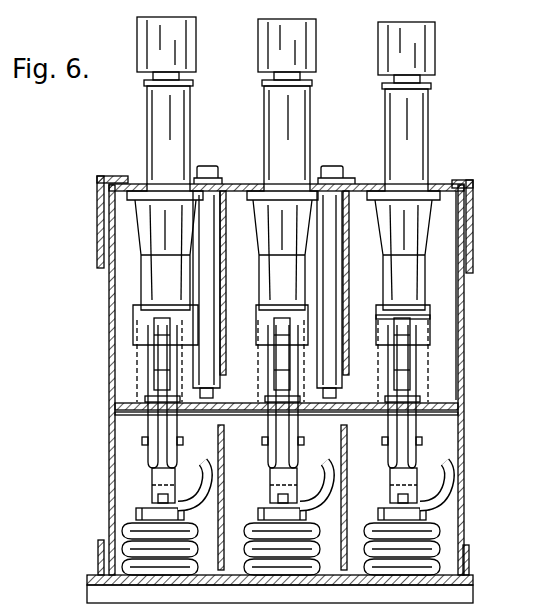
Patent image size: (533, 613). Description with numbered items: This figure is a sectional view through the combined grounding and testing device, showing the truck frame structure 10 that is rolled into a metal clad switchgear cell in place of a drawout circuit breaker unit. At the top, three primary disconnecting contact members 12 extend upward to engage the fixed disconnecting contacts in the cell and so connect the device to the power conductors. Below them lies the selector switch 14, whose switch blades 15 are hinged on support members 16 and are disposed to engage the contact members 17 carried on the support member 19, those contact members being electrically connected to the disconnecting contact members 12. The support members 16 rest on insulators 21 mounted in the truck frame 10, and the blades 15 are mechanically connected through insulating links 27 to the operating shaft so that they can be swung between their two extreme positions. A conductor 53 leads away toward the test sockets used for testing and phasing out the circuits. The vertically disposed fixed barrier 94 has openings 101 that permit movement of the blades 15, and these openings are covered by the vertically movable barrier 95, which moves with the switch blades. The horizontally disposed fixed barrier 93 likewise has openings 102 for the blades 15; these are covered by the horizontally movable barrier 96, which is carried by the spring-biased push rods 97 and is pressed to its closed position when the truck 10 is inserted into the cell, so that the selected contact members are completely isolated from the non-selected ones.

The truck frame structure 10 is at (92, 486).
The primary disconnecting contact members 12 is at (258, 44).
The selector switch 14 is at (150, 288).
The switch blades 15 is at (272, 378).
The support members 16 is at (160, 478).
The contact members 17 is at (160, 330).
The support member 19 is at (262, 265).
The insulators 21 is at (252, 526).
The insulating links 27 is at (172, 433).
The conductors 53 is at (448, 490).
The horizontally disposed fixed barrier 93 is at (448, 236).
The vertically disposed fixed barrier 94 is at (445, 418).
The vertically movable barrier 95 is at (432, 397).
The horizontally movable barrier 96 is at (430, 340).
The push rods 97 is at (246, 165).
The openings 101 is at (149, 415).
The openings 102 is at (150, 352).